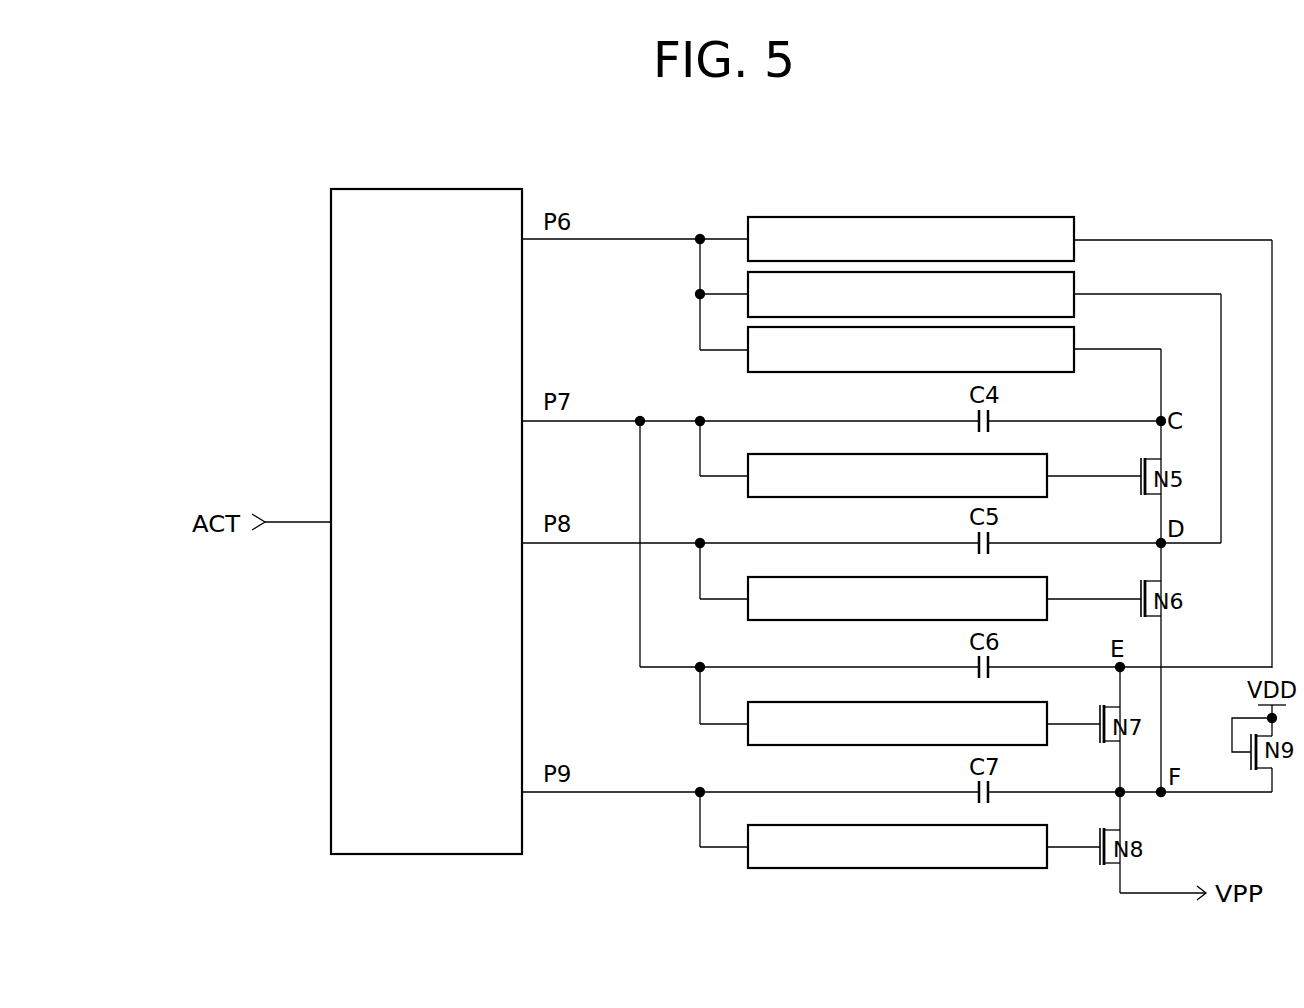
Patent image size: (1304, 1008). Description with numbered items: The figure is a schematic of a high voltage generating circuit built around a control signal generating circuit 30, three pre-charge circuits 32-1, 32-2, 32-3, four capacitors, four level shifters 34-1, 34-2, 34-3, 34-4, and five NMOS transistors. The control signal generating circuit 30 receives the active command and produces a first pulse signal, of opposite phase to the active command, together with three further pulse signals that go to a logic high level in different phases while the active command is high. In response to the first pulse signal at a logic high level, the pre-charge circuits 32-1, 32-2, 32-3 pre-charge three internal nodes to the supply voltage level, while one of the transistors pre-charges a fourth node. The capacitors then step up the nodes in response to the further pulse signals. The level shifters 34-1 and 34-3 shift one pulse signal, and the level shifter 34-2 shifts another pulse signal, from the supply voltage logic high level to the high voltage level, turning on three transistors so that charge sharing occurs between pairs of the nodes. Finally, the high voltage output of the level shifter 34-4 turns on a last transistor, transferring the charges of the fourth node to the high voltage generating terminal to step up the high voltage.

The control signal generating circuit 30 is at (493, 855).
The pre-charge circuit 32-1 is at (1076, 222).
The pre-charge circuit 32-2 is at (1076, 277).
The pre-charge circuit 32-3 is at (1076, 333).
The level shifter 34-1 is at (1056, 437).
The level shifter 34-2 is at (1056, 560).
The level shifter 34-3 is at (1056, 685).
The level shifter 34-4 is at (1056, 808).